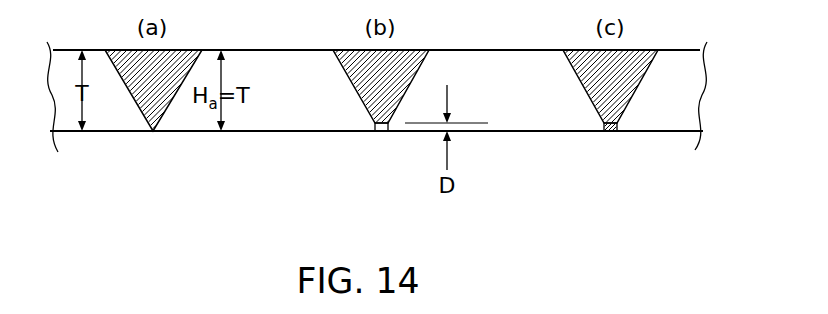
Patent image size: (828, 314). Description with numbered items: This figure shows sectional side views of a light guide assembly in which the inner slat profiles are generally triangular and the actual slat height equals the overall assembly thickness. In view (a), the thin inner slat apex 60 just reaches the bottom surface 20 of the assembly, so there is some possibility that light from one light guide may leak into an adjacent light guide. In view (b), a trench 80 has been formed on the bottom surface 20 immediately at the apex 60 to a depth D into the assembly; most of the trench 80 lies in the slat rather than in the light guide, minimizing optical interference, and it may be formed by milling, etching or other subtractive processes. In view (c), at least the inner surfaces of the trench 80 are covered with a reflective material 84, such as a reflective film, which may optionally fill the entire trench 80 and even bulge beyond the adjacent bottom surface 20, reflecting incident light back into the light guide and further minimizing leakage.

The bottom surface 20 is at (282, 132).
The inner slat apex 60 is at (153, 132).
The trench 80 is at (381, 132).
The reflective material 84 is at (610, 132).